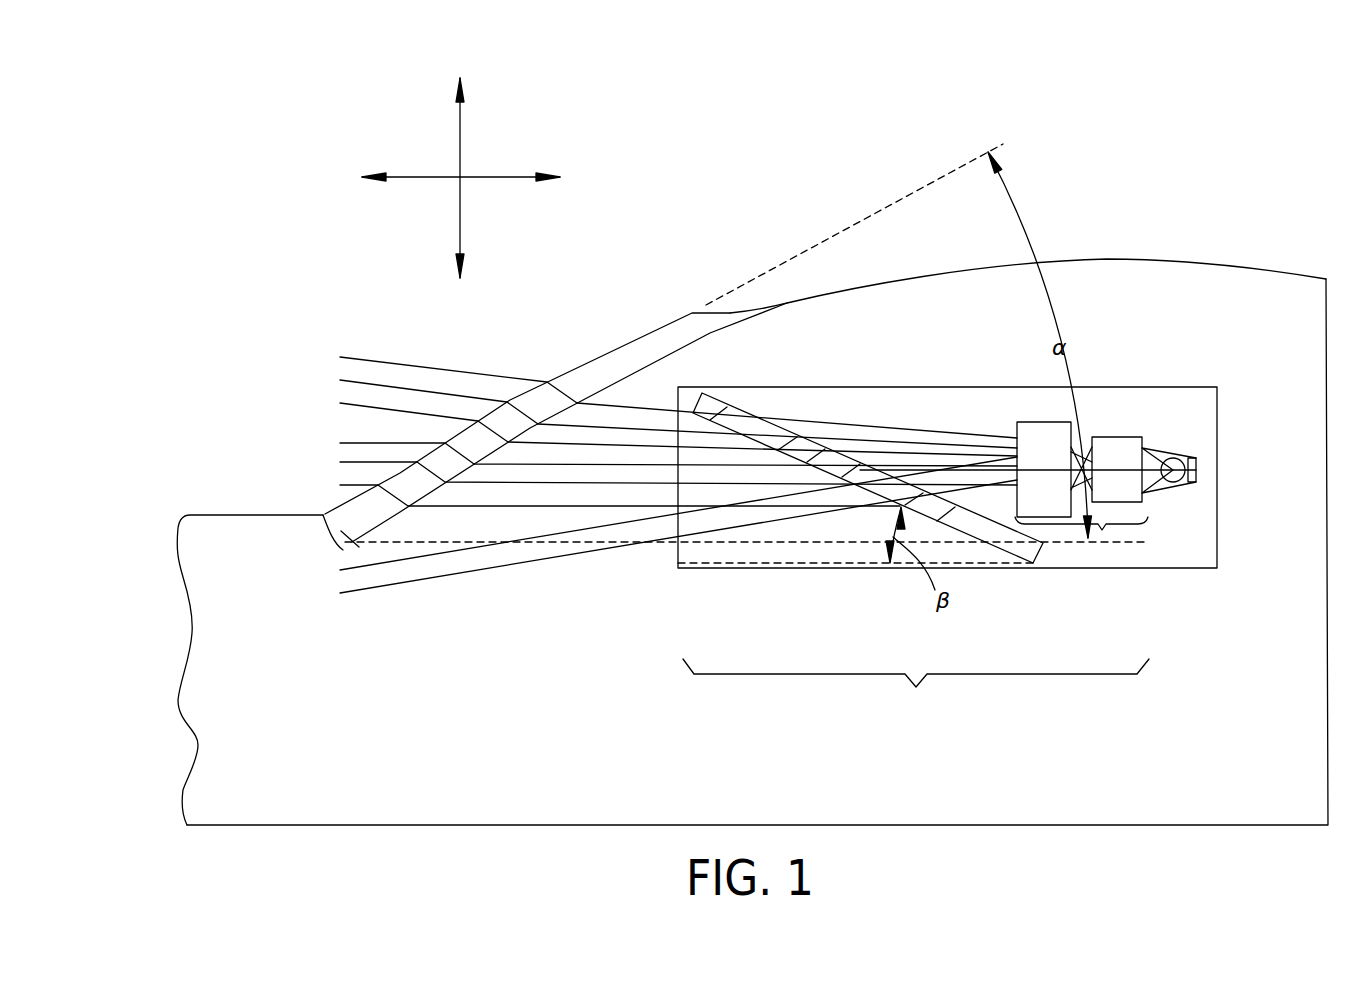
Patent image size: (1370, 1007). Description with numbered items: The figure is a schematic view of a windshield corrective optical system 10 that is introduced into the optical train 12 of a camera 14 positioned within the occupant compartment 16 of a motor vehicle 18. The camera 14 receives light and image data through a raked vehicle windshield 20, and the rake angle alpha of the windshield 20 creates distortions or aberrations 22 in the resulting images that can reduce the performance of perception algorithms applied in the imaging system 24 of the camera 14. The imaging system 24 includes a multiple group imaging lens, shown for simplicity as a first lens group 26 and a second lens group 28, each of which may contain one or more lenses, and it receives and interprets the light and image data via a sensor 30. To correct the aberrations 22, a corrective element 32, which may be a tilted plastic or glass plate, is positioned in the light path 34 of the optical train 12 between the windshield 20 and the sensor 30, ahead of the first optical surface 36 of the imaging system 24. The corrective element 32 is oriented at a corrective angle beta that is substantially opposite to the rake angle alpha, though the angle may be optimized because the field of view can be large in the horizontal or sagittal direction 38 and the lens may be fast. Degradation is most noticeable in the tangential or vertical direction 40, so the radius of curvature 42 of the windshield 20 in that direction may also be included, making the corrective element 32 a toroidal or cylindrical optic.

The windshield corrective optical system 10 is at (1178, 160).
The optical train 12 is at (916, 686).
The camera 14 is at (1198, 387).
The occupant compartment 16 is at (1168, 275).
The motor vehicle 18 is at (266, 543).
The raked vehicle windshield 20 is at (680, 328).
The aberrations 22 is at (606, 396).
The imaging system 24 is at (1103, 530).
The first lens group 26 is at (1045, 438).
The second lens group 28 is at (1115, 450).
The sensor 30 is at (1178, 458).
The corrective element 32 is at (1030, 548).
The light path 34 is at (618, 580).
The first optical surface 36 is at (1013, 422).
The horizontal or sagittal direction 38 is at (422, 178).
The tangential (vertical) direction 40 is at (460, 140).
The radius of curvature 42 is at (618, 332).